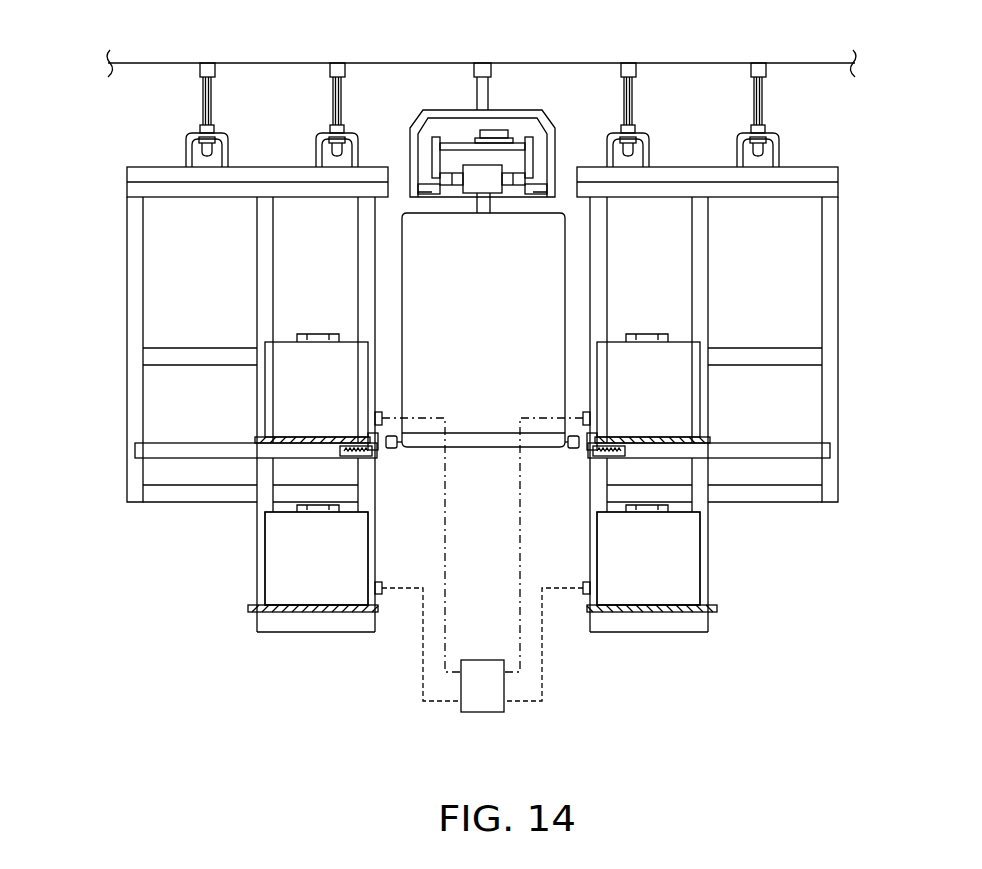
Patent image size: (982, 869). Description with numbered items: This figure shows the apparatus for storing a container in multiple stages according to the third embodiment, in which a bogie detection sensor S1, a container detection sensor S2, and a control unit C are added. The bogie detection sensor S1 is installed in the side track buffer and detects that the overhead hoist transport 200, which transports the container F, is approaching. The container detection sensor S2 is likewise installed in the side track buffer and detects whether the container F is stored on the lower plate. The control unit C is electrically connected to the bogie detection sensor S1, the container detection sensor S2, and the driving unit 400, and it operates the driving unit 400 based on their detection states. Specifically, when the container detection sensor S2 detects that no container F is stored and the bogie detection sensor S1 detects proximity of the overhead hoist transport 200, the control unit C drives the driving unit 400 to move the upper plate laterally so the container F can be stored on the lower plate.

The overhead hoist transport 200 is at (563, 203).
The driving unit 400 is at (481, 448).
The bogie detection sensor S1 is at (378, 411).
The container detection sensor S2 is at (386, 594).
The container F is at (263, 554).
The control unit C is at (482, 565).